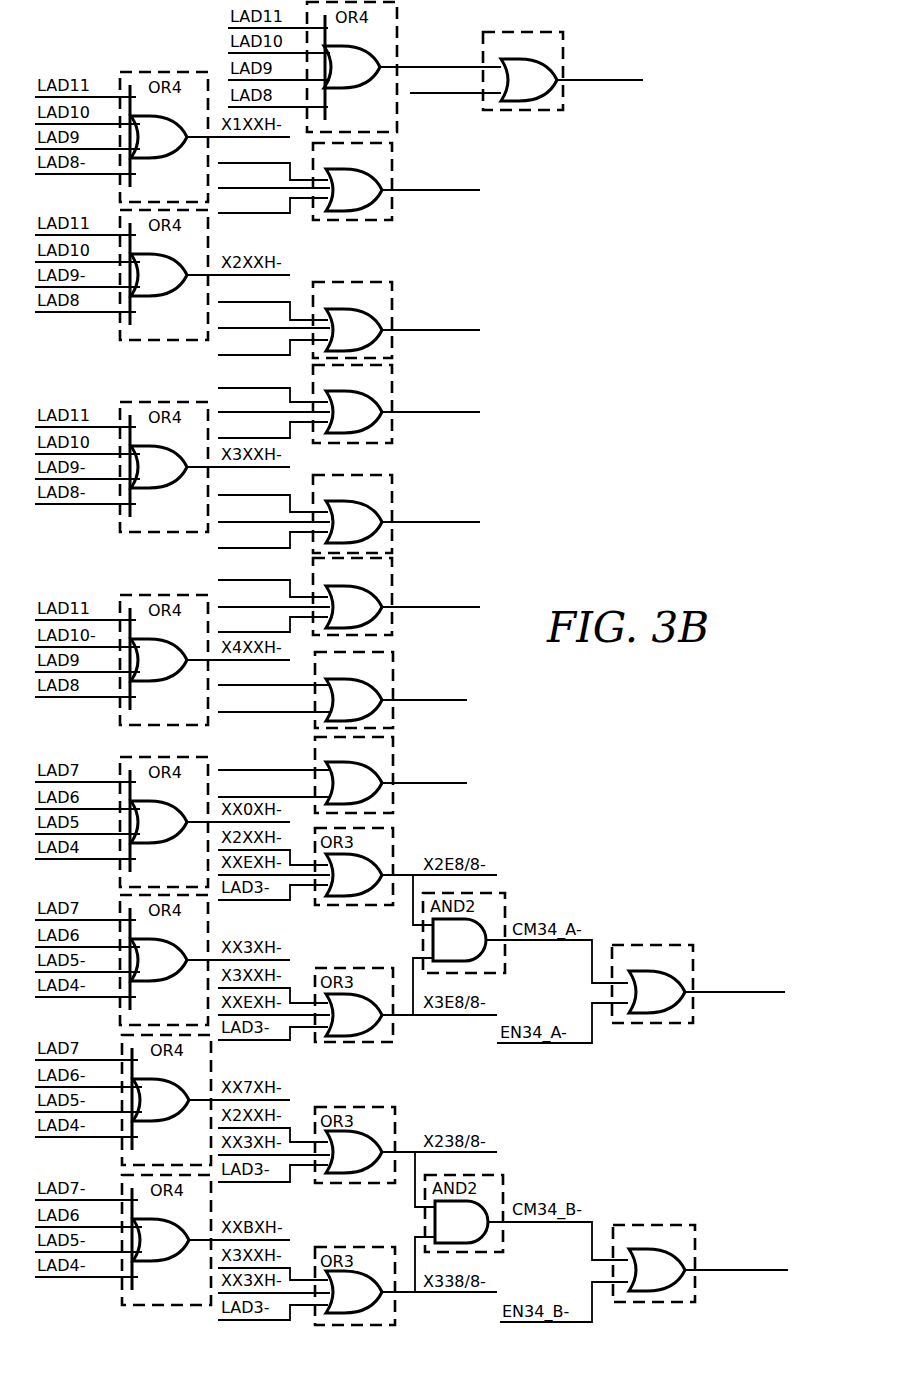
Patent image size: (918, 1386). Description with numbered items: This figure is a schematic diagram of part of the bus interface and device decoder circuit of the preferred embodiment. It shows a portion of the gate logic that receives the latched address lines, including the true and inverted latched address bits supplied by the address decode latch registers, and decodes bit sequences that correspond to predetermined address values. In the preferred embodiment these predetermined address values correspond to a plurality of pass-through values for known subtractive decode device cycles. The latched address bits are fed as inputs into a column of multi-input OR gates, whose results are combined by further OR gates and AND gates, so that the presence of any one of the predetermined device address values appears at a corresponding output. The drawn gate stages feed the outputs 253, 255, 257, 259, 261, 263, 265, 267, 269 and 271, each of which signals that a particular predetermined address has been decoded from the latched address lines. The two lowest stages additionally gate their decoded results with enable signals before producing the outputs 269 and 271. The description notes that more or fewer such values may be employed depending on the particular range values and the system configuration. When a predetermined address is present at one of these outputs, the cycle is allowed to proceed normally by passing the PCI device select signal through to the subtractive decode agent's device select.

The output 253 is at (607, 83).
The output 255 is at (445, 193).
The output 257 is at (445, 333).
The output 259 is at (445, 415).
The output 261 is at (445, 525).
The output 263 is at (445, 610).
The output 265 is at (445, 705).
The output 267 is at (445, 788).
The output 269 is at (750, 995).
The output 271 is at (752, 1272).